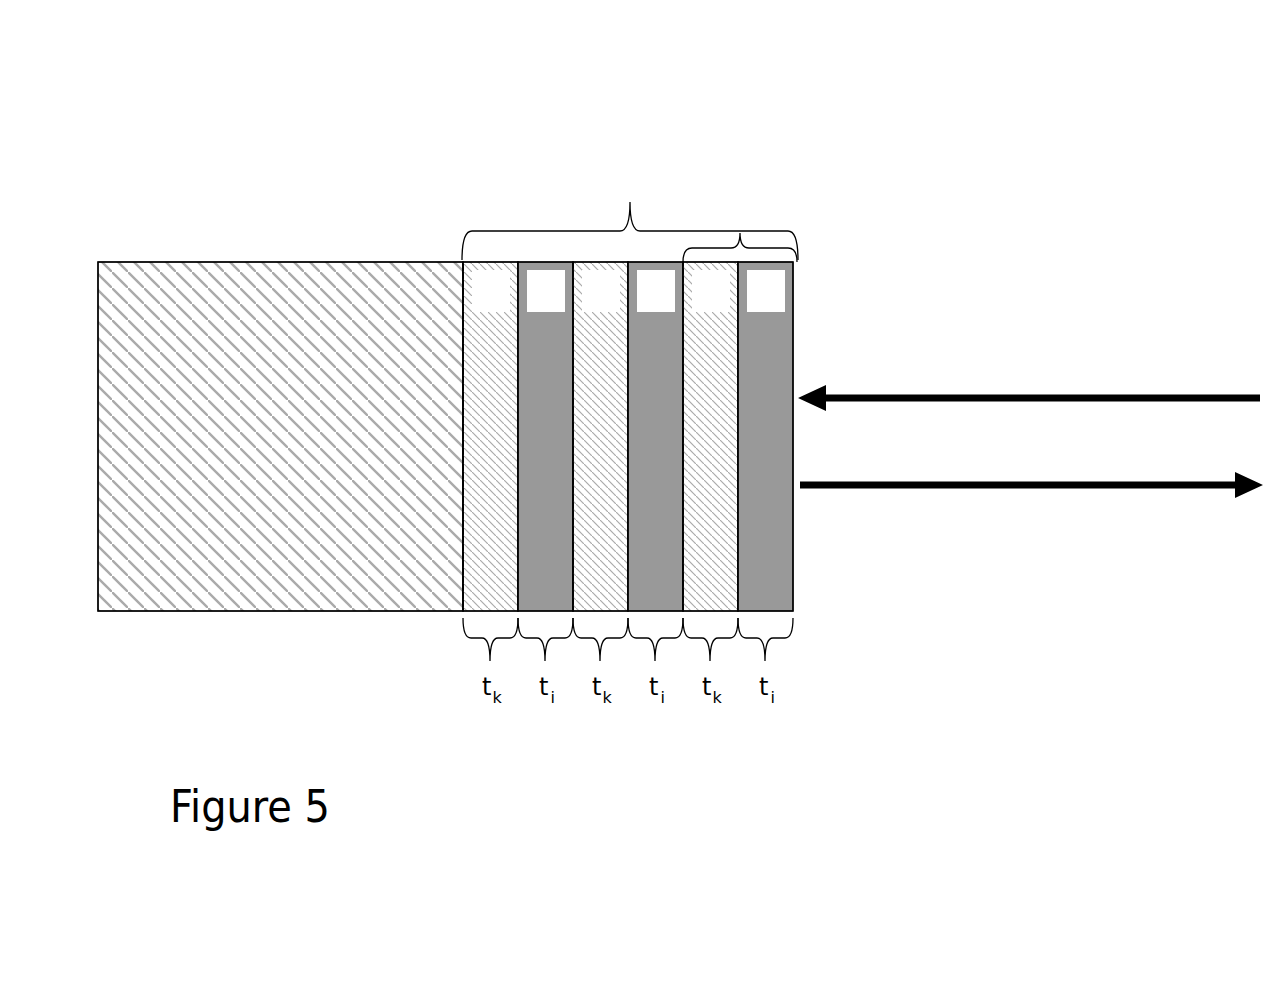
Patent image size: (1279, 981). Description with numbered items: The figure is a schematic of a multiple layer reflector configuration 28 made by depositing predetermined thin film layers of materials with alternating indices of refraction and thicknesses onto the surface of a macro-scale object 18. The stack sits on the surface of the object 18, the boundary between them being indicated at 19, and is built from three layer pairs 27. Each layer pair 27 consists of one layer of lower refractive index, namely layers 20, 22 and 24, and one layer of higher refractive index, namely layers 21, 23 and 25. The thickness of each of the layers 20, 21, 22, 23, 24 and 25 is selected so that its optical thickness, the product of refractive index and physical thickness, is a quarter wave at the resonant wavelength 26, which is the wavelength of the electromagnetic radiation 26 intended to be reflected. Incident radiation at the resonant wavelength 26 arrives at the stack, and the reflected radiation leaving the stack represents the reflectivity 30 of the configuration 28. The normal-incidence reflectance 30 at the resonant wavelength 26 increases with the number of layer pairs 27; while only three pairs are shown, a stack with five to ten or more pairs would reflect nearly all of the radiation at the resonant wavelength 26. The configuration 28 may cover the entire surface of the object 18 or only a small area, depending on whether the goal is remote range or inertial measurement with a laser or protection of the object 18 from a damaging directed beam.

The macro-scale object 18 is at (192, 320).
The substrate surface / interface 19 is at (448, 261).
The lower refractive index layer 20 is at (490, 436).
The higher refractive index layer 21 is at (545, 436).
The lower refractive index layer 22 is at (600, 436).
The higher refractive index layer 23 is at (655, 436).
The lower refractive index layer 24 is at (710, 436).
The higher refractive index layer 25 is at (765, 436).
The resonant wavelength 26 is at (1029, 370).
The layer pair 27 is at (740, 233).
The multiple layer reflector configuration 28 is at (630, 202).
The reflectivity 30 is at (1031, 516).